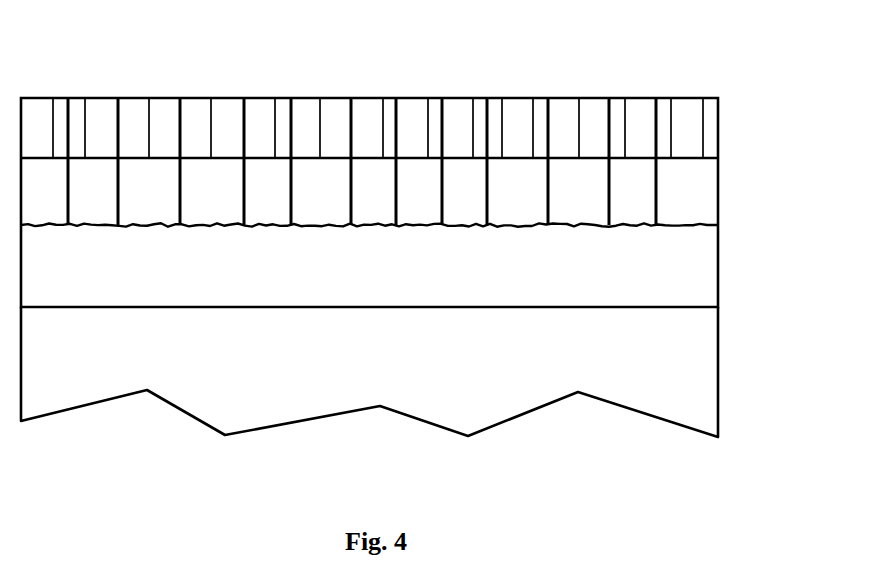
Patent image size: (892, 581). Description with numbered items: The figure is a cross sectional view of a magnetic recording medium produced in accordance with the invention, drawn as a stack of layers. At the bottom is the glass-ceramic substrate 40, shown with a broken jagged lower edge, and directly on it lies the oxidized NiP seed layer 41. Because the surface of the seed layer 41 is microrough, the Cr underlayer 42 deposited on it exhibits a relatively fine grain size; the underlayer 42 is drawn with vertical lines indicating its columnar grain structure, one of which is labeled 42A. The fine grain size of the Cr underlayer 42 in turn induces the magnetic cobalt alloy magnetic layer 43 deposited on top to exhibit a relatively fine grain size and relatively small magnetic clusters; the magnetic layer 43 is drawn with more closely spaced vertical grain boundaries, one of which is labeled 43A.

The glass-ceramic substrate 40 is at (718, 363).
The oxidized NiP seed layer 41 is at (390, 266).
The Cr underlayer 42 is at (388, 162).
The column of second layer 42A is at (681, 188).
The cobalt alloy magnetic layer 43 is at (395, 128).
The column of third layer 43A is at (662, 110).